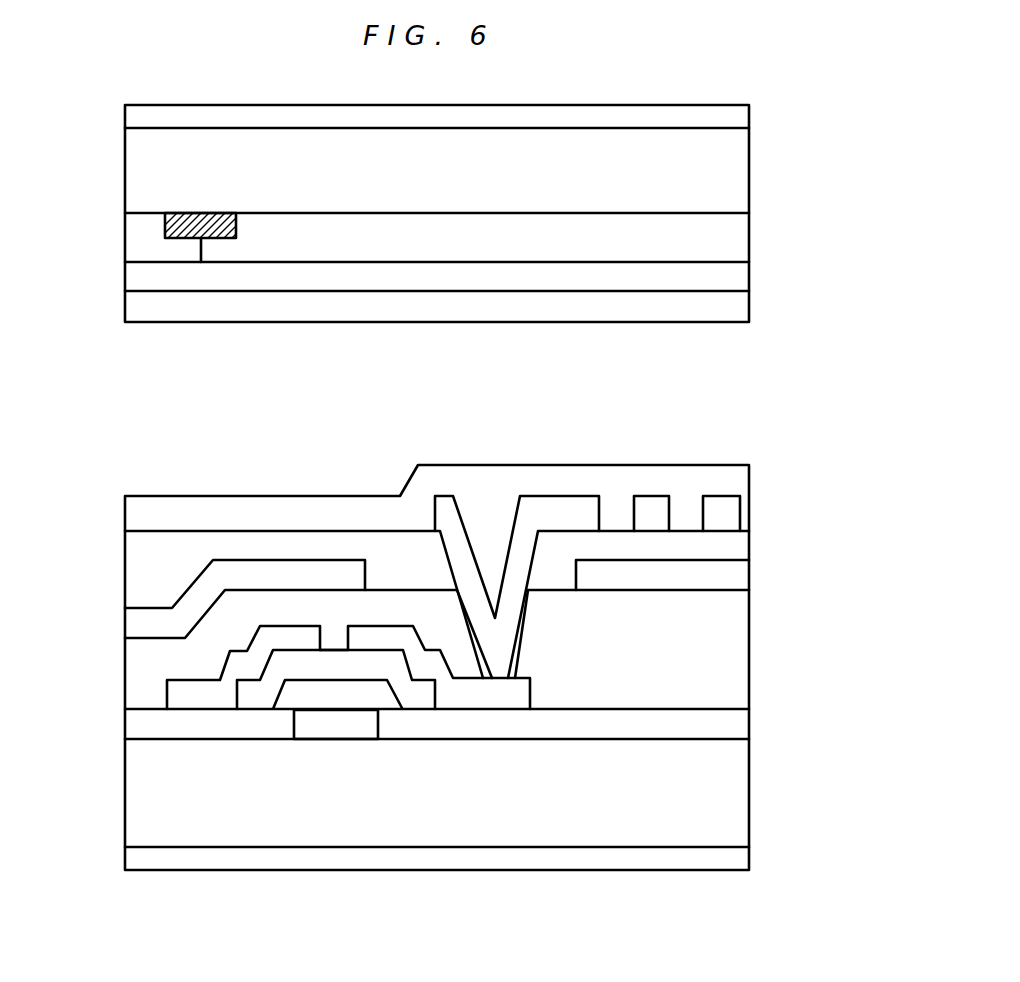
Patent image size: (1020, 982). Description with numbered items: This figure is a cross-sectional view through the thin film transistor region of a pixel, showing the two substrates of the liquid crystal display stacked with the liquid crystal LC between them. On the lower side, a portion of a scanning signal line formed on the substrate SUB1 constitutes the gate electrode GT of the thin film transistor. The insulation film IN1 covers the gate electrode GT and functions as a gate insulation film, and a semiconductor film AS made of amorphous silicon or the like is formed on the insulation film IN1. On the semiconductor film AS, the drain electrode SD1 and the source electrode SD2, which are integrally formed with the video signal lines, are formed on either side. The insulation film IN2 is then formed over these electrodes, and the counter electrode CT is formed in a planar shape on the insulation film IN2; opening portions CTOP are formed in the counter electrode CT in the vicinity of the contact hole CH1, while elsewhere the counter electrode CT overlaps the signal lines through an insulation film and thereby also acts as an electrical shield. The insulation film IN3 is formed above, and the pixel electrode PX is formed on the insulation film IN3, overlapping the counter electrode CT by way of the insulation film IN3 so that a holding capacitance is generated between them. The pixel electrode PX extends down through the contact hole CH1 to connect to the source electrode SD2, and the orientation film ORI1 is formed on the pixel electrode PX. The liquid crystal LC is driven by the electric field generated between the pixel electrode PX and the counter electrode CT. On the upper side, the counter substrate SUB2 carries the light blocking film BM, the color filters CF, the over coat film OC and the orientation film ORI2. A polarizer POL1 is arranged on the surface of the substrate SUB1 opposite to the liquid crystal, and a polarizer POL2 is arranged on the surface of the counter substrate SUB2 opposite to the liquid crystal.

The polarizer POL2 is at (738, 118).
The counter substrate SUB2 is at (736, 171).
The color filters CF is at (736, 235).
The light blocking film BM is at (164, 224).
The over coat film OC is at (736, 282).
The orientation film ORI2 is at (738, 312).
The liquid crystal LC is at (642, 383).
The orientation film ORI1 is at (733, 477).
The pixel electrode PX is at (727, 512).
The contact hole CH1 is at (492, 520).
The insulation film IN3 is at (739, 543).
The counter electrode CT is at (733, 574).
The opening portions CTOP is at (385, 563).
The insulation film IN2 is at (728, 652).
The drain electrode SD1 is at (187, 693).
The semiconductor film AS is at (258, 698).
The source electrode SD2 is at (487, 703).
The insulation film IN1 is at (735, 723).
The gate electrode GT is at (345, 730).
The substrate SUB1 is at (737, 784).
The polarizer POL1 is at (737, 858).